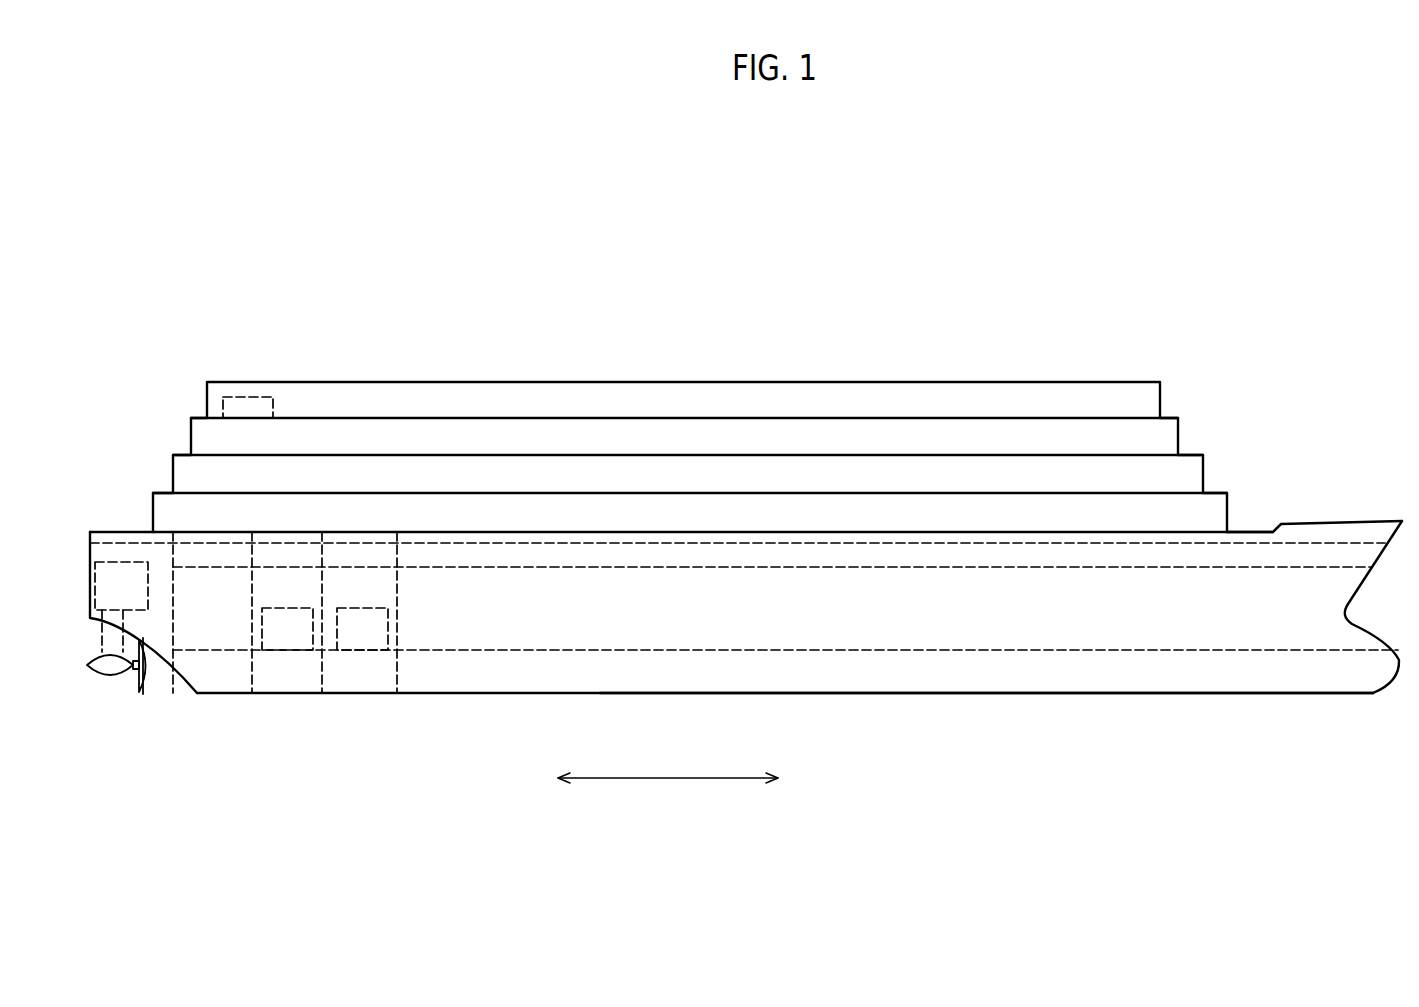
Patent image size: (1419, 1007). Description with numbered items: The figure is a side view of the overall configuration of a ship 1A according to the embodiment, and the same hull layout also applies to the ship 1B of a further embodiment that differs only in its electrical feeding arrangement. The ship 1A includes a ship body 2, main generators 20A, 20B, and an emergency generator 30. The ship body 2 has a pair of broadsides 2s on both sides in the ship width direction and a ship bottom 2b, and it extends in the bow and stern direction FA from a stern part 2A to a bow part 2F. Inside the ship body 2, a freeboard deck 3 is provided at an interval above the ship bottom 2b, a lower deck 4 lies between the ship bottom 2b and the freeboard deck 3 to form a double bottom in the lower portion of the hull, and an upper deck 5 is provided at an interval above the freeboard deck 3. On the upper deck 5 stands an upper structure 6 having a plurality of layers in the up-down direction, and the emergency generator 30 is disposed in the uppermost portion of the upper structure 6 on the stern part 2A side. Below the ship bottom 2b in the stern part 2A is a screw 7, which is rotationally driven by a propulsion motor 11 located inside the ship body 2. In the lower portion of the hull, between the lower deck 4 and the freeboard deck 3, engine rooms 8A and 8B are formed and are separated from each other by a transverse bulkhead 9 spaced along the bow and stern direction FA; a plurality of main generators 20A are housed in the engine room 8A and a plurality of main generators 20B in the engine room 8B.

The ship 1A is at (812, 348).
The ship 1B is at (746, 441).
The ship body 2 is at (1057, 533).
The stern part 2A is at (98, 531).
The bow part 2F is at (1387, 521).
The broadside 2s is at (1040, 627).
The ship bottom 2b is at (1112, 697).
The freeboard deck 3 is at (838, 567).
The lower deck 4 is at (940, 650).
The upper deck 5 is at (1243, 535).
The upper structure 6 is at (1160, 382).
The screw 7 is at (145, 692).
The engine room 8A is at (295, 588).
The engine room 8B is at (362, 583).
The transverse bulkhead 9 is at (165, 397).
The propulsion motor 11 is at (133, 562).
The main generator 20A is at (262, 630).
The main generator 20B is at (388, 630).
The emergency generator 30 is at (233, 397).
The bow and stern direction FA is at (668, 765).